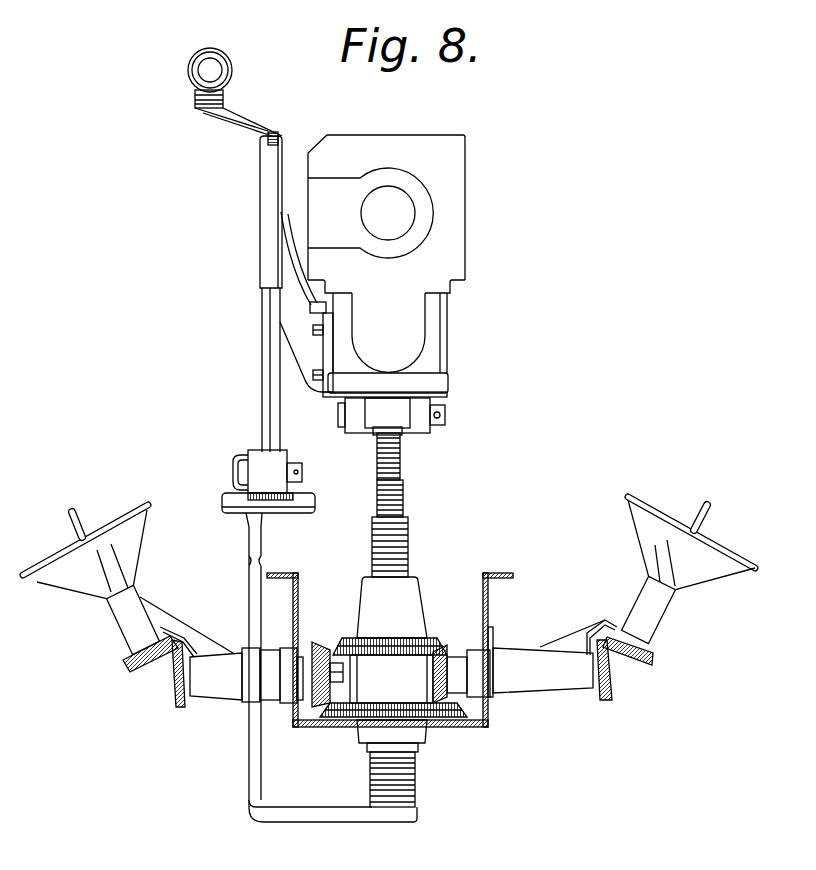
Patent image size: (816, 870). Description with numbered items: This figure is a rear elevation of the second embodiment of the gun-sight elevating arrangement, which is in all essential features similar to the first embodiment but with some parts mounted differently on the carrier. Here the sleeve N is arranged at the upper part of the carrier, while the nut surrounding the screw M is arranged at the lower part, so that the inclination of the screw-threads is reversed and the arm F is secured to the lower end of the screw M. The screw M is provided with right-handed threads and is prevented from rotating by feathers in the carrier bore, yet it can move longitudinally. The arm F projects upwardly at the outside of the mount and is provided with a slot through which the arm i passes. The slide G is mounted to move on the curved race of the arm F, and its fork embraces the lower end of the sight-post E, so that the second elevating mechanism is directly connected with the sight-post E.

The sight-post E is at (262, 380).
The slide G is at (287, 491).
The arm F is at (251, 542).
The sleeve N is at (415, 597).
The screw M is at (388, 780).
The arm i is at (217, 688).